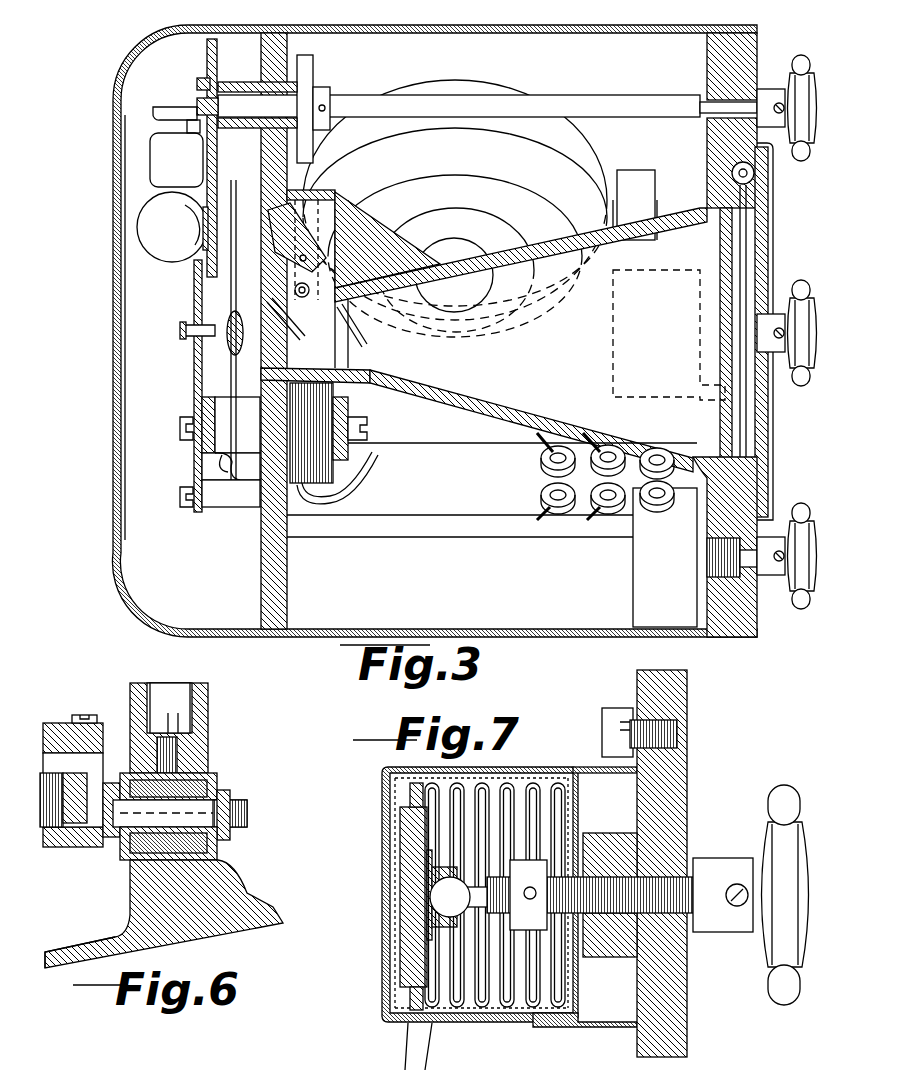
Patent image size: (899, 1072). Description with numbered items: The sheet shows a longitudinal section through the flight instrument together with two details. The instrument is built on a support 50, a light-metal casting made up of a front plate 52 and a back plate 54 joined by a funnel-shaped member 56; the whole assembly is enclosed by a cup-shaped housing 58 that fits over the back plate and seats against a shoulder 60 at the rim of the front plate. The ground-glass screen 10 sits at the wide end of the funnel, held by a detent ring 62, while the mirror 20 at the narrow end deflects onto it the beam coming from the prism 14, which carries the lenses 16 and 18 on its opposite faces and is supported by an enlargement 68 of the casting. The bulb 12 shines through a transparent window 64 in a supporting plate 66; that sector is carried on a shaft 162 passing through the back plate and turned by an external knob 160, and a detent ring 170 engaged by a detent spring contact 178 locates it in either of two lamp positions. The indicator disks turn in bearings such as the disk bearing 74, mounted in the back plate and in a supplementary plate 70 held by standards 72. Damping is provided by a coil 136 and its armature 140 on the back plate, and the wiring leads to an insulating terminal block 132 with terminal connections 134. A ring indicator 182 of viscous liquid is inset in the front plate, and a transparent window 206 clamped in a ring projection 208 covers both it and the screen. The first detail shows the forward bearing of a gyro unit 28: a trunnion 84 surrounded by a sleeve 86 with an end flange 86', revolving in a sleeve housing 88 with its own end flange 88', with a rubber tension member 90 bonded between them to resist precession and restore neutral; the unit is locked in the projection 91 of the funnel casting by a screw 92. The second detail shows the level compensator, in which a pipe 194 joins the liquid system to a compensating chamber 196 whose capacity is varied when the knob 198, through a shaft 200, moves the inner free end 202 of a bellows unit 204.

In FIG. 3, the visible screen 10 is at (727, 287).
In FIG. 3, the bulb 12 is at (170, 246).
In FIG. 3, the prism 14 is at (340, 190).
In FIG. 3, the lens 16 is at (262, 201).
In FIG. 3, the lens 18 is at (287, 267).
In FIG. 3, the mirror 20 is at (358, 373).
In FIG. 3, the gyro unit 28 is at (590, 142).
In FIG. 6, the gyro unit 28 is at (60, 723).
In FIG. 3, the support 50 is at (480, 393).
In FIG. 3, the front plate 52 is at (720, 58).
In FIG. 7, the front plate 52 is at (688, 708).
In FIG. 3, the back plate 54 is at (280, 593).
In FIG. 3, the funnel-shaped member 56 is at (458, 388).
In FIG. 3, the housing 58 is at (505, 31).
In FIG. 3, the shoulder 60 is at (757, 637).
In FIG. 3, the detent ring 62 is at (760, 456).
In FIG. 3, the transparent window 64 is at (182, 331).
In FIG. 3, the supporting plate 66 is at (206, 60).
In FIG. 3, the enlargement 68 is at (397, 176).
In FIG. 3, the supplementary plate 70 is at (193, 371).
In FIG. 3, the standards 72 is at (227, 503).
In FIG. 3, the disk bearing 74 is at (193, 336).
In FIG. 6, the trunnion 84 is at (200, 813).
In FIG. 6, the sleeve 86 is at (192, 775).
In FIG. 6, the end flange 86' is at (212, 843).
In FIG. 6, the sleeve housing 88 is at (187, 728).
In FIG. 6, the end flange 88' is at (104, 762).
In FIG. 6, the rubber tension member 90 is at (127, 860).
In FIG. 6, the projection 91 is at (193, 890).
In FIG. 6, the screw 92 is at (180, 720).
In FIG. 3, the terminal block 132 is at (437, 512).
In FIG. 3, the terminal connections 134 is at (560, 507).
In FIG. 3, the coil 136 is at (353, 493).
In FIG. 3, the armature 140 is at (227, 474).
In FIG. 3, the knob 160 is at (795, 88).
In FIG. 3, the shaft 162 is at (600, 100).
In FIG. 3, the detent ring 170 is at (310, 75).
In FIG. 3, the detent spring contact 178 is at (360, 153).
In FIG. 3, the ring indicator 182 is at (755, 181).
In FIG. 7, the pipe 194 is at (427, 1027).
In FIG. 7, the compensating chamber 196 is at (383, 775).
In FIG. 3, the knob 198 is at (790, 371).
In FIG. 7, the knob 198 is at (773, 840).
In FIG. 7, the shaft 200 is at (660, 887).
In FIG. 7, the inner free end 202 is at (410, 847).
In FIG. 7, the bellows unit 204 is at (500, 787).
In FIG. 3, the transparent window 206 is at (757, 240).
In FIG. 3, the ring projection 208 is at (773, 513).